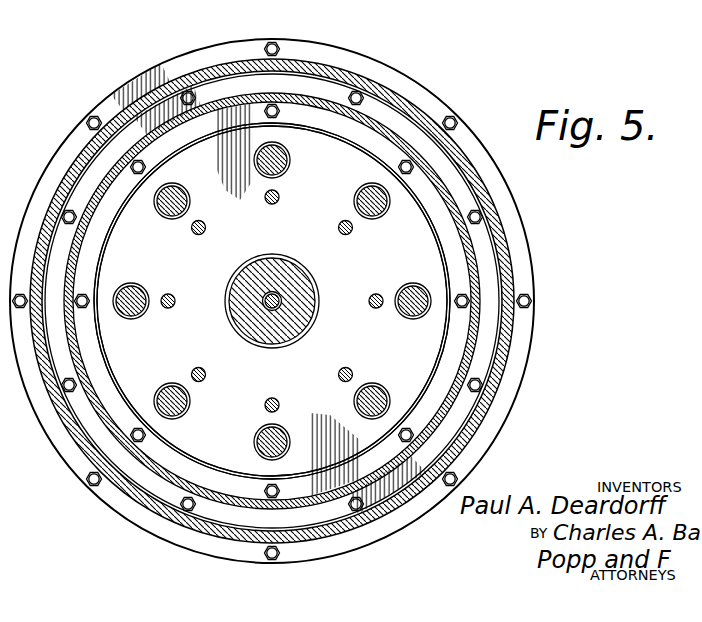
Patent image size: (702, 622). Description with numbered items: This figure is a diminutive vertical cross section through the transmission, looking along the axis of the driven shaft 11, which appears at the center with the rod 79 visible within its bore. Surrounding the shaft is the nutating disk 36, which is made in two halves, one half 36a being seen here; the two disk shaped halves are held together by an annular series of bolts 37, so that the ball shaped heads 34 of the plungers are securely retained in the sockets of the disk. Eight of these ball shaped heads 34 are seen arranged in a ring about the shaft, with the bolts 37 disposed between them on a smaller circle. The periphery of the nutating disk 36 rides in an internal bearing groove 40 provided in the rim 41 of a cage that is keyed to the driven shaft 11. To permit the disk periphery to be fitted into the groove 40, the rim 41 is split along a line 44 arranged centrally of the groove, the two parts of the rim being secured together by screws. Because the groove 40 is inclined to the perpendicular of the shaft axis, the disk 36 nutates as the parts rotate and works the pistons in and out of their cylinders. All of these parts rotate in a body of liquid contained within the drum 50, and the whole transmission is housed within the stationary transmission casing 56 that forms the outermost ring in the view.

The driven shaft 11 is at (298, 278).
The ball shaped head 34 is at (356, 193).
The nutating disk 36 is at (452, 263).
The disk half 36a is at (272, 301).
The bolts 37 is at (266, 199).
The internal bearing groove 40 is at (308, 125).
The rim 41 is at (383, 148).
The split line 44 is at (457, 337).
The drum 50 is at (223, 100).
The transmission casing 56 is at (357, 73).
The rod 79 is at (265, 304).